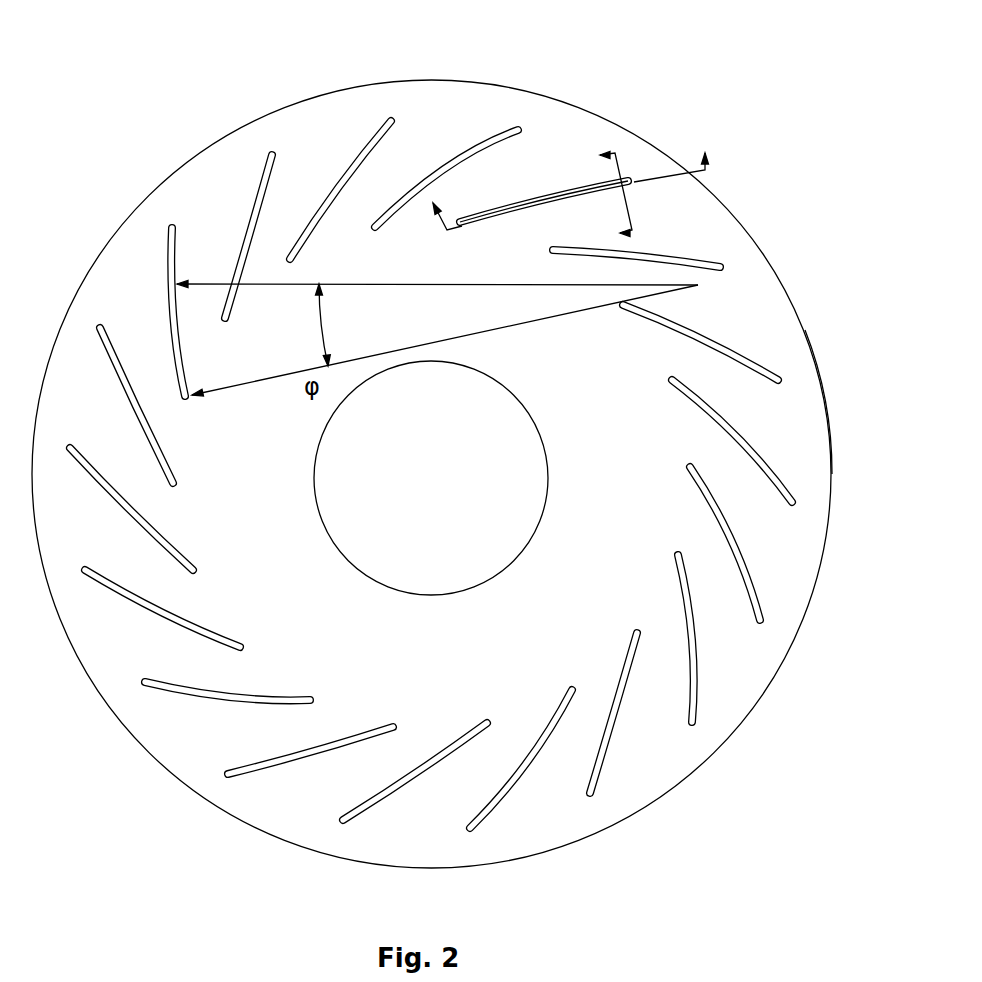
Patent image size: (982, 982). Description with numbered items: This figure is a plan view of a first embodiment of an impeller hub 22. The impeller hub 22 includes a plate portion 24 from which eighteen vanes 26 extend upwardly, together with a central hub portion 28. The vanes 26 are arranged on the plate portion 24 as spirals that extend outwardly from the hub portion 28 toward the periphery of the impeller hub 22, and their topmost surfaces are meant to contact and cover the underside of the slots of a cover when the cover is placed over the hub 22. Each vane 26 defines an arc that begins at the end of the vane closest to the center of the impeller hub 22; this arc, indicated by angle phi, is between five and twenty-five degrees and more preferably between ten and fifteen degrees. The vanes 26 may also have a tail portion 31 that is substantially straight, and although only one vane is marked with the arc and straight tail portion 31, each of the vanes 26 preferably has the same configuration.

The impeller hub 22 is at (628, 112).
The plate portion 24 is at (805, 330).
The vanes 26 is at (693, 328).
The central hub portion 28 is at (518, 405).
The tail portion 31 is at (163, 227).